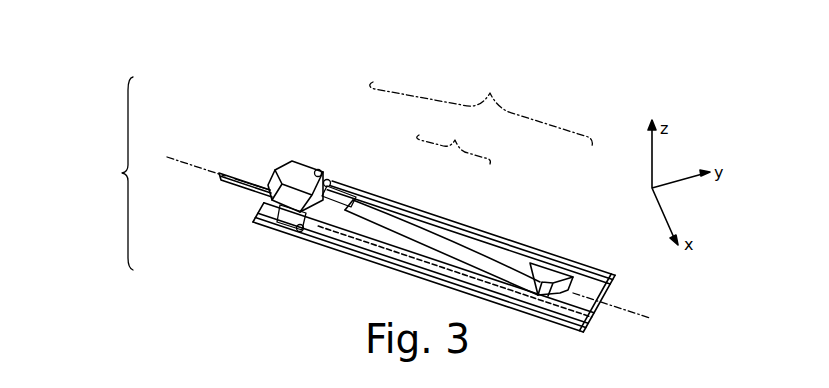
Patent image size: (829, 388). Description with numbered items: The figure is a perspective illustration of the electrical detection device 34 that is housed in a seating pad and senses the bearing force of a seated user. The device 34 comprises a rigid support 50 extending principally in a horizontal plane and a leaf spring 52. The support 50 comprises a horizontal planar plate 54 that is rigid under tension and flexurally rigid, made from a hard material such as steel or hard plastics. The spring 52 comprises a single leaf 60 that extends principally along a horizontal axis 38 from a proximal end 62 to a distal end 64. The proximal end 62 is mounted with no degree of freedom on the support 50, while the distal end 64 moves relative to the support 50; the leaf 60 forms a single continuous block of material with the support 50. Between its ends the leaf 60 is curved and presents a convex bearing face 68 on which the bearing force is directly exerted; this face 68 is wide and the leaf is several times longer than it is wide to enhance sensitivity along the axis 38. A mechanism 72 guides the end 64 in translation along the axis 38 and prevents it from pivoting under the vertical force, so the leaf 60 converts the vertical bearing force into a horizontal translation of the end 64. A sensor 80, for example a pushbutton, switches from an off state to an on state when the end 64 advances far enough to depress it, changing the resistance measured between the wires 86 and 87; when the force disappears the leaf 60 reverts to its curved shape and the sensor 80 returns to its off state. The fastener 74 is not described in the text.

The electrical detection device 34 is at (113, 173).
The horizontal axis 38 is at (185, 158).
The rigid support 50 is at (683, 297).
The leaf spring 52 is at (481, 106).
The horizontal planar plate 54 is at (587, 301).
The leaf 60 is at (454, 138).
The proximal end 62 is at (557, 257).
The distal end 64 is at (332, 178).
The convex bearing face 68 is at (430, 227).
The translational guiding mechanism 72 is at (280, 197).
The fastening screw 74 is at (318, 169).
The sensor 80 is at (288, 167).
The wire 86 is at (225, 170).
The wire 87 is at (237, 190).